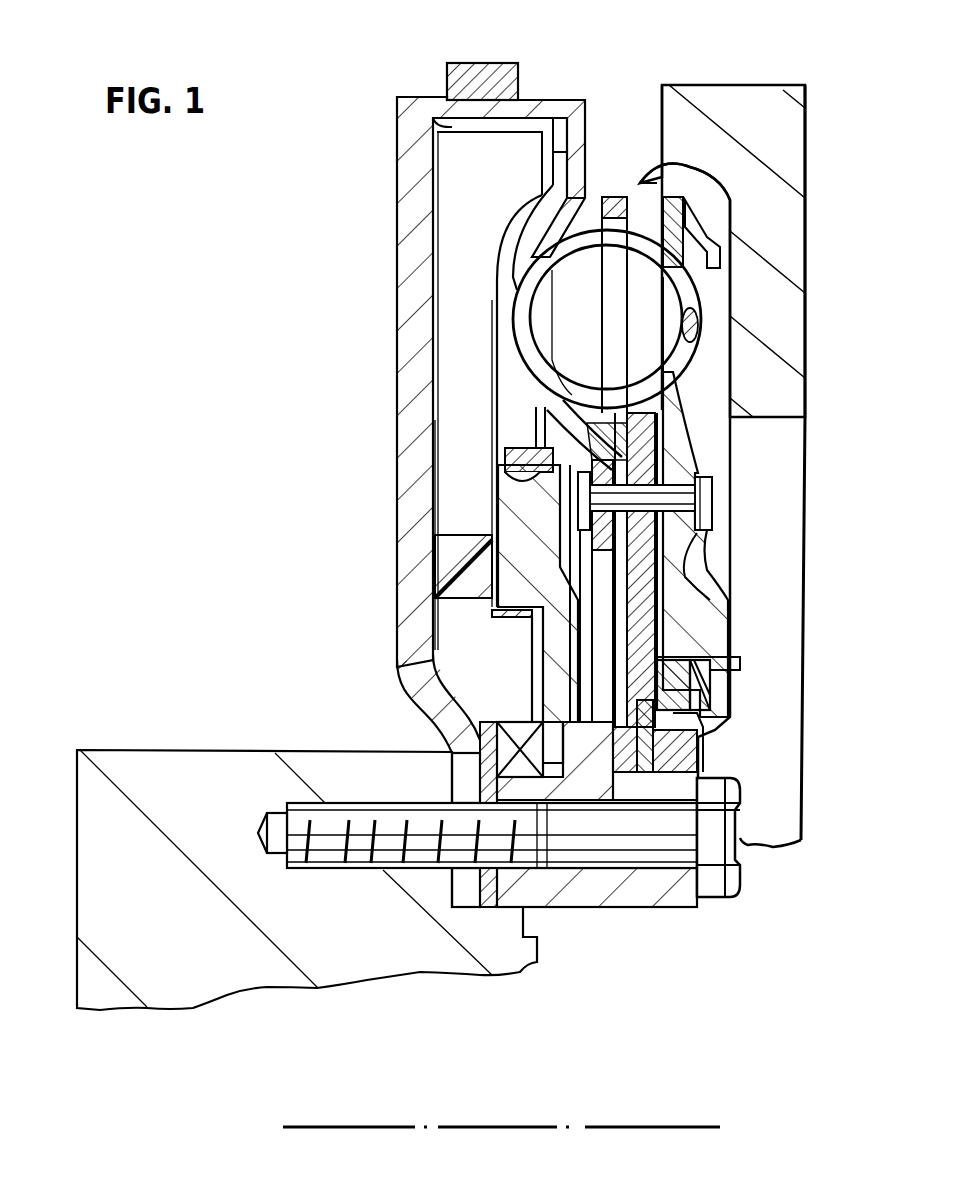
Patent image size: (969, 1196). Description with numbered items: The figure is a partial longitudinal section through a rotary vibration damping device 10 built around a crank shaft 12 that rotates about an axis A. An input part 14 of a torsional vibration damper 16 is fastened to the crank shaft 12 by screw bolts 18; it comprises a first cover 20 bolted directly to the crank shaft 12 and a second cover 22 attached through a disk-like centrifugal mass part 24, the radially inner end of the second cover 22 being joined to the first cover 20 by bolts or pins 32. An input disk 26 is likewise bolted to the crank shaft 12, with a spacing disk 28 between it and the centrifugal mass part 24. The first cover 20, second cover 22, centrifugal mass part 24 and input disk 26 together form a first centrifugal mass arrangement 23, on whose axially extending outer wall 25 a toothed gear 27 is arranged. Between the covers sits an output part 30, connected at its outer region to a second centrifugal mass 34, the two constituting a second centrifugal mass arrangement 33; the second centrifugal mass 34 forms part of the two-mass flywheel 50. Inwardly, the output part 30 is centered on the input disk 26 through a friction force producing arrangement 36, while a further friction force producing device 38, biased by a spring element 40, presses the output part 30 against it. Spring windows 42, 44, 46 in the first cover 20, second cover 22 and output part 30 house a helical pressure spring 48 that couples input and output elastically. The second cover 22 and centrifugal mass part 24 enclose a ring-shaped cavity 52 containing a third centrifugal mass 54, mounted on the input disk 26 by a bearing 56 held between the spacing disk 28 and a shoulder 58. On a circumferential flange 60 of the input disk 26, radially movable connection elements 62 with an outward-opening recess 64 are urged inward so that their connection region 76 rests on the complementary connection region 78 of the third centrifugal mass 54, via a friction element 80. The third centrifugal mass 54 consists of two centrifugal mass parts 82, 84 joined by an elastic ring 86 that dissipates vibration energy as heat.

The rotary vibration damping device 10 is at (258, 272).
The crank shaft 12 is at (98, 760).
The input part 14 is at (587, 108).
The torsional vibration damper 16 is at (714, 86).
The screw bolts 18 is at (732, 883).
The first cover 20 is at (692, 432).
The second cover 22 is at (580, 193).
The first centrifugal mass arrangement 23 is at (396, 142).
The centrifugal mass part 24 is at (398, 192).
The outer wall 25 is at (548, 100).
The input disk 26 is at (600, 908).
The toothed gear 27 is at (463, 62).
The spacing disk 28 is at (490, 905).
The output part 30 is at (640, 183).
The bolts or pins 32 is at (712, 512).
The second centrifugal mass arrangement 33 is at (806, 110).
The second centrifugal mass 34 is at (806, 173).
The friction force producing arrangement 36 is at (697, 776).
The further friction force producing device 38 is at (717, 630).
The spring element 40 is at (702, 690).
The spring window 42 is at (678, 388).
The spring window 44 is at (650, 272).
The spring window 46 is at (547, 350).
The helical pressure spring 48 is at (512, 303).
The two-mass flywheel 50 is at (388, 113).
The ring-shaped cavity 52 is at (397, 97).
The third centrifugal mass 54 is at (428, 417).
The bearing 56 is at (485, 745).
The shoulder 58 is at (547, 765).
The circumferential flange 60 is at (637, 775).
The connection elements 62 is at (498, 532).
The circumferential recess 64 is at (503, 466).
The connection region 76 is at (432, 590).
The connection region 78 is at (520, 628).
The friction element 80 is at (490, 612).
The centrifugal mass part 82 is at (428, 386).
The centrifugal mass part 84 is at (420, 678).
The elastic ring 86 is at (430, 548).
The axis A is at (642, 1128).